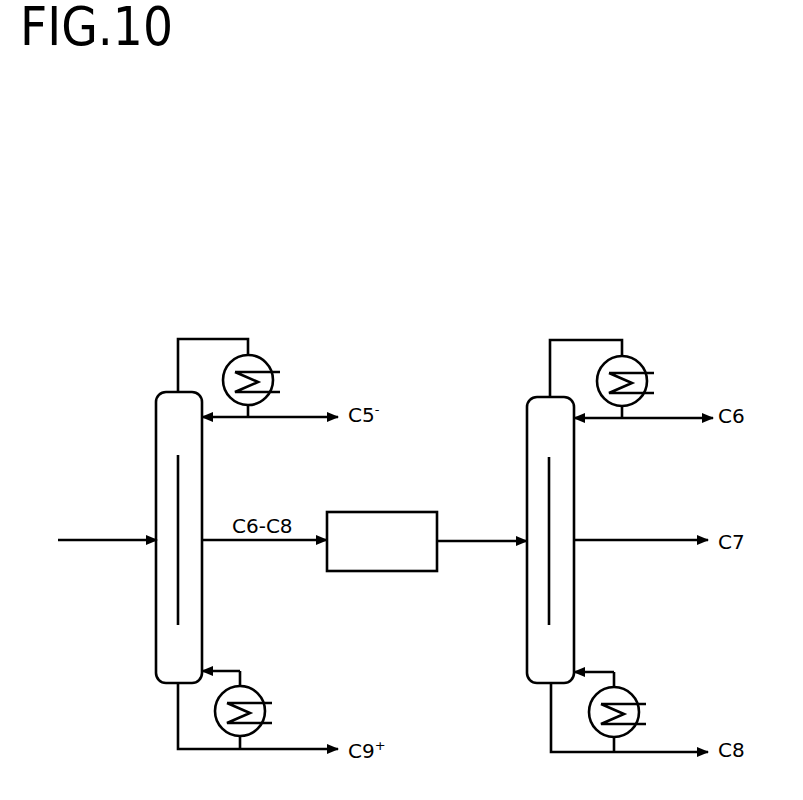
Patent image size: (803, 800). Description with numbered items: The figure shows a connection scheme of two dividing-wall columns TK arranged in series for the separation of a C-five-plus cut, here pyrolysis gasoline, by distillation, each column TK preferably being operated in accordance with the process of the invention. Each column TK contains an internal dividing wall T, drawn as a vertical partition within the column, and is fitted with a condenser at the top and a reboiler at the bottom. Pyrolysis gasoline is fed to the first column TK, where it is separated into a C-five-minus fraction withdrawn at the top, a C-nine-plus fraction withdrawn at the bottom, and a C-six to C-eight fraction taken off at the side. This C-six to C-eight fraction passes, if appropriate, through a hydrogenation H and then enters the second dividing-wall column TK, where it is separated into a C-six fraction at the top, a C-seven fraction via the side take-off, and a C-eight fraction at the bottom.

The dividing-wall column TK is at (143, 507).
The dividing wall T is at (177, 490).
The hydrogenation H is at (382, 541).